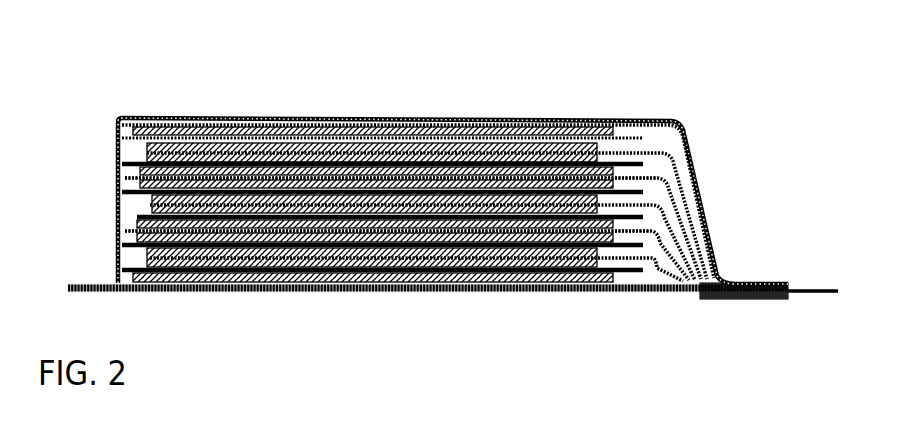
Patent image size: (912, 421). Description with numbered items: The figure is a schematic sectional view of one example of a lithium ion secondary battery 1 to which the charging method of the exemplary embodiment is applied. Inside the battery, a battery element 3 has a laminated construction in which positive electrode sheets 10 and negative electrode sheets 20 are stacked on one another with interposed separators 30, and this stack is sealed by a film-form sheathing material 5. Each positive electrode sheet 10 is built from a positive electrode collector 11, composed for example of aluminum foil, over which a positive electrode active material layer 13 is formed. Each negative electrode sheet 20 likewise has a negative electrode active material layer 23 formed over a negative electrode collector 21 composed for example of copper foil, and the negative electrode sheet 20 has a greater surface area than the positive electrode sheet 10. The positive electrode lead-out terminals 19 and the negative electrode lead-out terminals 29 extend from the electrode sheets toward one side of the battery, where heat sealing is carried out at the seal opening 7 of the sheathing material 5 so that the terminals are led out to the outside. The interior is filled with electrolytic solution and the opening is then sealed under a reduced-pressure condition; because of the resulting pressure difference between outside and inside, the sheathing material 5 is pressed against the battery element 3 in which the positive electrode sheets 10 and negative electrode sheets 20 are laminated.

The lithium ion secondary battery 1 is at (684, 94).
The battery element 3 is at (40, 122).
The sheathing material 5 is at (528, 116).
The seal opening 7 is at (793, 299).
The positive electrode sheet 10 is at (363, 208).
The positive electrode collector 11 is at (150, 205).
The positive electrode active material layer 13 is at (135, 192).
The positive electrode lead-out terminal 19 is at (688, 156).
The negative electrode sheet 20 is at (73, 100).
The negative electrode collector 21 is at (118, 118).
The negative electrode active material layer 23 is at (124, 126).
The negative electrode lead-out terminal 29 is at (677, 131).
The separator 30 is at (122, 165).